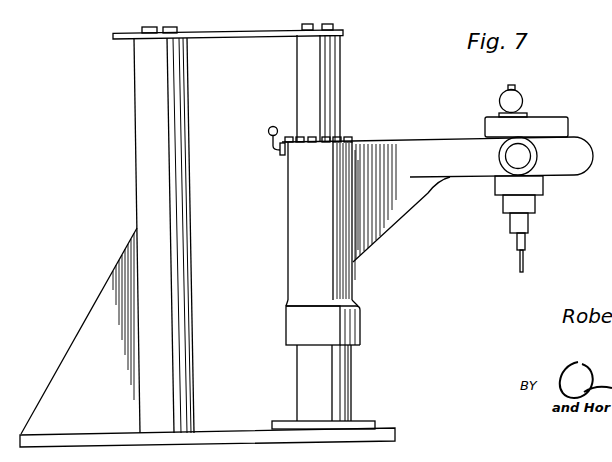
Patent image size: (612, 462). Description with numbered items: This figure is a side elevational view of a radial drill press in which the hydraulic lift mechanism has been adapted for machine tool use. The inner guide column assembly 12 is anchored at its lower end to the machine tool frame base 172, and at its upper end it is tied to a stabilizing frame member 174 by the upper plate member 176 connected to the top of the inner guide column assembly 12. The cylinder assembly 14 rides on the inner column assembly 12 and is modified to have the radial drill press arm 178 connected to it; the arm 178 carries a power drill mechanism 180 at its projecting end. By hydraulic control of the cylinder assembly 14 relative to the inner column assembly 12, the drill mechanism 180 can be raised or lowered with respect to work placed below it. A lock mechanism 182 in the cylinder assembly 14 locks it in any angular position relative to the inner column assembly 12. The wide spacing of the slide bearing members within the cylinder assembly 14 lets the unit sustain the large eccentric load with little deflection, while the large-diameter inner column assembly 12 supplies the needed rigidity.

The inner guide column assembly 12 is at (346, 99).
The cylinder assembly 14 is at (281, 238).
The machine tool frame base 172 is at (224, 434).
The stabilizing frame member 174 is at (147, 73).
The upper plate member 176 is at (229, 39).
The radial drill press arm 178 is at (433, 152).
The power drill mechanism 180 is at (540, 218).
The lock mechanism 182 is at (274, 153).